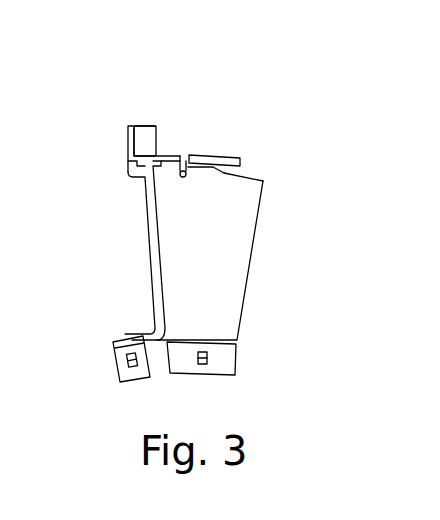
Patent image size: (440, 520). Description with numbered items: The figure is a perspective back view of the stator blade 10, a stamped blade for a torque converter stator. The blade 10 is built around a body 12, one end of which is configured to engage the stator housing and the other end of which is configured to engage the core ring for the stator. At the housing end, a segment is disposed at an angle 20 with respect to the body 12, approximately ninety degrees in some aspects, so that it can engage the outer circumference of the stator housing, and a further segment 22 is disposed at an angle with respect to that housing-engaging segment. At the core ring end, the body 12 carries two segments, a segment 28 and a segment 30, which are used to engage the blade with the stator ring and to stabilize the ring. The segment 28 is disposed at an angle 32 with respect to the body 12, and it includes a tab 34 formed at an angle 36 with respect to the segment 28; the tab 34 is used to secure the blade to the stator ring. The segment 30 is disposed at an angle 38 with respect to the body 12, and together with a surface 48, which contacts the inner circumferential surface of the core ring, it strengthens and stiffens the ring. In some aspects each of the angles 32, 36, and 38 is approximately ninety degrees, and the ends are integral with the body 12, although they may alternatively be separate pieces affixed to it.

The stator blade 10 is at (241, 86).
The body 12 is at (212, 276).
The angle 20 is at (141, 327).
The segment 22 is at (238, 368).
The segment 28 is at (121, 122).
The segment 30 is at (243, 165).
The angle 32 is at (136, 184).
The tab 34 is at (148, 128).
The angle 36 is at (173, 147).
The angle 38 is at (216, 186).
The surface 48 is at (222, 156).